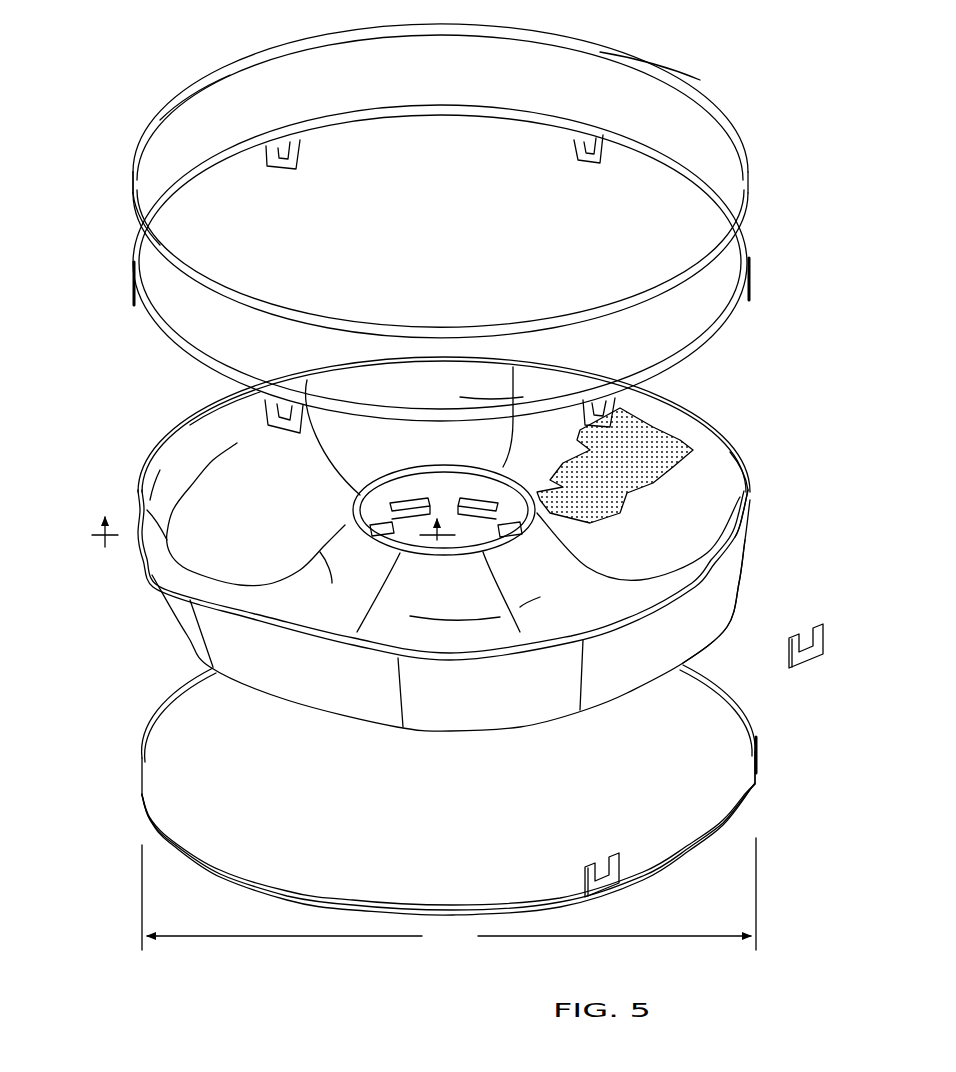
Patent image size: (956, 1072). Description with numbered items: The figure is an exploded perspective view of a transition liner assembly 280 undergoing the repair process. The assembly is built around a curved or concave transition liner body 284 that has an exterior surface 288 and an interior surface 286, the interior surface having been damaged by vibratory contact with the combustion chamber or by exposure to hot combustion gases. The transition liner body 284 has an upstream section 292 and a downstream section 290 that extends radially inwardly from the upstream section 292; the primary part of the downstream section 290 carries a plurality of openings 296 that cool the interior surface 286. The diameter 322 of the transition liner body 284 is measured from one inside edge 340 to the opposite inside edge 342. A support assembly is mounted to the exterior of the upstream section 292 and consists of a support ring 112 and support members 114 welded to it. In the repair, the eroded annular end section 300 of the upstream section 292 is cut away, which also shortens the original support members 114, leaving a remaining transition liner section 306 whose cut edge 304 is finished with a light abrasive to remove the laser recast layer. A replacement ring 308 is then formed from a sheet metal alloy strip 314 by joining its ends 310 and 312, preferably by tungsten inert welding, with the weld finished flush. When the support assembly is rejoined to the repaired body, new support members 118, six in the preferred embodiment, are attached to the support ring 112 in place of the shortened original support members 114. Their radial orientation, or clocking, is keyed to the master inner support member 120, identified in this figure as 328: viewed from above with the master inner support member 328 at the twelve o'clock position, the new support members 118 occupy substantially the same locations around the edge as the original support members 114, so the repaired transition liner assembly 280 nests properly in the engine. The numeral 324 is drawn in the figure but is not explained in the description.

The annular end section 300 is at (412, 107).
The replacement ring 308 is at (672, 56).
The end 310 is at (133, 172).
The end 312 is at (133, 193).
The sheet metal alloy strip 314 is at (186, 97).
The support members 114 is at (133, 283).
The transition liner assembly 280 is at (58, 402).
The transition liner body 284 is at (722, 418).
The interior surface 286 is at (738, 494).
The exterior surface 288 is at (738, 585).
The downstream section 290 is at (237, 500).
The upstream section 292 is at (212, 424).
The openings 296 is at (650, 437).
The rim edge 324 is at (146, 476).
The master inner support member 120 is at (482, 553).
The master inner support member 328 is at (514, 532).
The cut edge 304 is at (168, 577).
The remaining transition liner section 306 is at (212, 640).
The inside edge 340 is at (142, 780).
The inside edge 342 is at (786, 806).
The support ring 112 is at (197, 843).
The new support members 118 is at (827, 642).
The diameter 322 is at (449, 894).